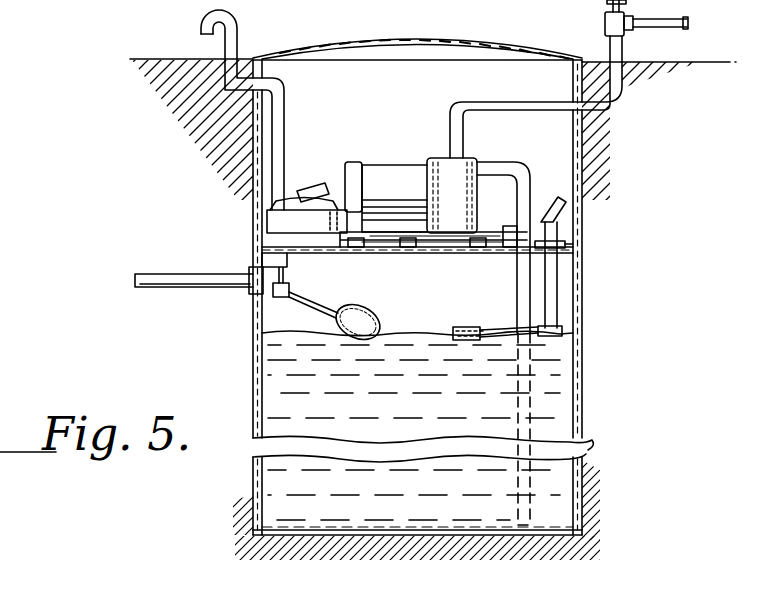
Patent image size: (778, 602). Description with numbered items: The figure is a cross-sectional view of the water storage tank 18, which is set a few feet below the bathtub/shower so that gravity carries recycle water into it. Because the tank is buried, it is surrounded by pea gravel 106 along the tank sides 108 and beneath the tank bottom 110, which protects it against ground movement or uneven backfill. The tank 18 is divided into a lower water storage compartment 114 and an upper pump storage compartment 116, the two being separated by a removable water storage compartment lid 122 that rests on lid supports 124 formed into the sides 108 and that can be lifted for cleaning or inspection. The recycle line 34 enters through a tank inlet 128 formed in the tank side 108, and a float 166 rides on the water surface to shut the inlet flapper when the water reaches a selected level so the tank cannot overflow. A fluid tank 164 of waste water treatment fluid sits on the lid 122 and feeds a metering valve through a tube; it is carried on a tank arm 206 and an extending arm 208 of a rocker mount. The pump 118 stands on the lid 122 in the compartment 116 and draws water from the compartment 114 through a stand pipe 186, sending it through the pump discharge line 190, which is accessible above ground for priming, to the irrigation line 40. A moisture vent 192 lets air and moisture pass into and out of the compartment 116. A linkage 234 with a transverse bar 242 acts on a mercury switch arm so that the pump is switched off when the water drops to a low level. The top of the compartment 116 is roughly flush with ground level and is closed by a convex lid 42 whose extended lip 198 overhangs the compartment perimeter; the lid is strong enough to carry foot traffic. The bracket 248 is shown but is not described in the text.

The water storage tank 18 is at (582, 295).
The recycle line 34 is at (153, 274).
The irrigation line 40 is at (684, 30).
The lid 42 is at (330, 42).
The pea gravel 106 is at (600, 522).
The tank sides 108 is at (592, 445).
The tank bottom 110 is at (285, 540).
The water storage compartment 114 is at (483, 319).
The pump storage compartment 116 is at (410, 112).
The pump 118 is at (393, 172).
The water storage compartment lid 122 is at (418, 254).
The lid supports 124 is at (262, 255).
The tank inlet 128 is at (253, 291).
The fluid tank 164 is at (268, 222).
The float 166 is at (366, 312).
The stand pipe 186 is at (518, 512).
The pump discharge line 190 is at (624, 99).
The moisture vent 192 is at (210, 18).
The extended lip 198 is at (604, 60).
The tank arm 206 is at (358, 248).
The extending arm 208 is at (408, 248).
The linkage 234 is at (560, 311).
The transverse bar 242 is at (551, 207).
The bracket 248 is at (563, 204).